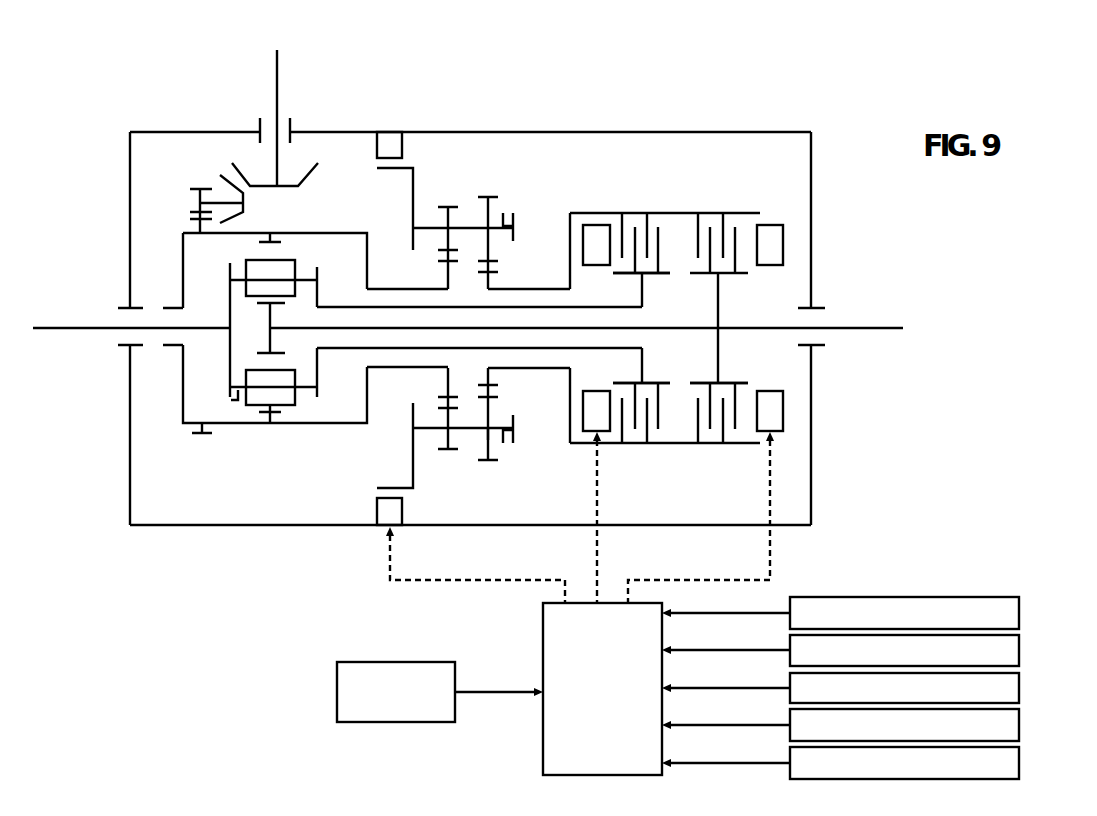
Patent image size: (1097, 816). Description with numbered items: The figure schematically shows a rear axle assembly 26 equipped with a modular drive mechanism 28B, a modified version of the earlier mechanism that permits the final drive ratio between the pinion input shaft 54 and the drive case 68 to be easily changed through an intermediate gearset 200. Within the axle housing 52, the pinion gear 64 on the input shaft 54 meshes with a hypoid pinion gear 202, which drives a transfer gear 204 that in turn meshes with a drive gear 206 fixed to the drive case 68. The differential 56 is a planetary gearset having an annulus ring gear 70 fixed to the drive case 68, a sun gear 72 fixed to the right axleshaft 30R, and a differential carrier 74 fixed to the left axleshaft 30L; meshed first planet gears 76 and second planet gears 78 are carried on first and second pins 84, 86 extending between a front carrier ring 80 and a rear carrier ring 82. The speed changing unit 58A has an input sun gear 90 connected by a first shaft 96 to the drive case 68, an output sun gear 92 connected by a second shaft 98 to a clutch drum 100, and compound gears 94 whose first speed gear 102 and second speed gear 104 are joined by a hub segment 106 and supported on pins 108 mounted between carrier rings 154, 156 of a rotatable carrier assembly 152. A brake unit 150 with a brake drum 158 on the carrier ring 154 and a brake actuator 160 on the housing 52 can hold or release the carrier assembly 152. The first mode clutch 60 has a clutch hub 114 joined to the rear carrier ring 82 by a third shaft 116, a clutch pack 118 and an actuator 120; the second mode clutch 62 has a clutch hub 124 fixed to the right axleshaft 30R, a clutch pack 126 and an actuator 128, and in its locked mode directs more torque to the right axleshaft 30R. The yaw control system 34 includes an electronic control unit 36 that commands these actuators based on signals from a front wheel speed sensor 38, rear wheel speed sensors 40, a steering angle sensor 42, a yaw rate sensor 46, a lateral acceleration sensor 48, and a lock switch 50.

The rear axle assembly 26 is at (555, 409).
The drive mechanism 28B is at (468, 311).
The left axleshaft 30L is at (53, 327).
The right axleshaft 30R is at (866, 327).
The yaw control system 34 is at (677, 605).
The electronic control unit 36 is at (553, 629).
The front wheel speed sensor 38 is at (1019, 616).
The rear wheel speed sensor 40 is at (1019, 654).
The steering angle sensor 42 is at (1019, 691).
The yaw rate sensor 46 is at (1019, 728).
The lateral acceleration sensor 48 is at (1019, 766).
The lock switch 50 is at (337, 678).
The axle housing 52 is at (812, 165).
The input shaft 54 is at (277, 80).
The differential 56 is at (265, 389).
The speed changing unit 58A is at (468, 307).
The first mode clutch 60 is at (665, 315).
The second mode clutch 62 is at (773, 319).
The pinion gear 64 is at (311, 173).
The drive case 68 is at (305, 232).
The annulus ring gear 70 is at (277, 425).
The sun gear 72 is at (276, 346).
The differential carrier 74 is at (252, 264).
The first planet gears 76 is at (290, 266).
The second planet gears 78 is at (292, 396).
The front carrier ring 80 is at (236, 358).
The rear carrier ring 82 is at (320, 291).
The first pins 84 is at (305, 282).
The second pins 86 is at (236, 400).
The input sun gear 90 is at (452, 383).
The output sun gear 92 is at (494, 380).
The compound gears 94 is at (457, 230).
The first shaft 96 is at (384, 288).
The second shaft 98 is at (531, 288).
The clutch drum 100 is at (676, 212).
The first speed gear 102 is at (448, 452).
The second speed gear 104 is at (494, 448).
The hub segment 106 is at (470, 433).
The pins 108 is at (503, 222).
The clutch hub 114 is at (644, 291).
The third shaft 116 is at (468, 310).
The multi-plate clutch pack 118 is at (652, 412).
The clutch actuator 120 is at (596, 230).
The clutch hub 124 is at (720, 298).
The multi-plate clutch pack 126 is at (713, 425).
The clutch actuator 128 is at (783, 240).
The brake unit 150 is at (420, 156).
The carrier assembly 152 is at (374, 445).
The carrier ring 154 is at (392, 209).
The carrier ring 156 is at (516, 225).
The brake drum 158 is at (390, 488).
The brake actuator 160 is at (386, 136).
The intermediate gearset 200 is at (224, 186).
The hypoid pinion gear 202 is at (235, 216).
The transfer gear 204 is at (194, 188).
The drive gear 206 is at (211, 453).